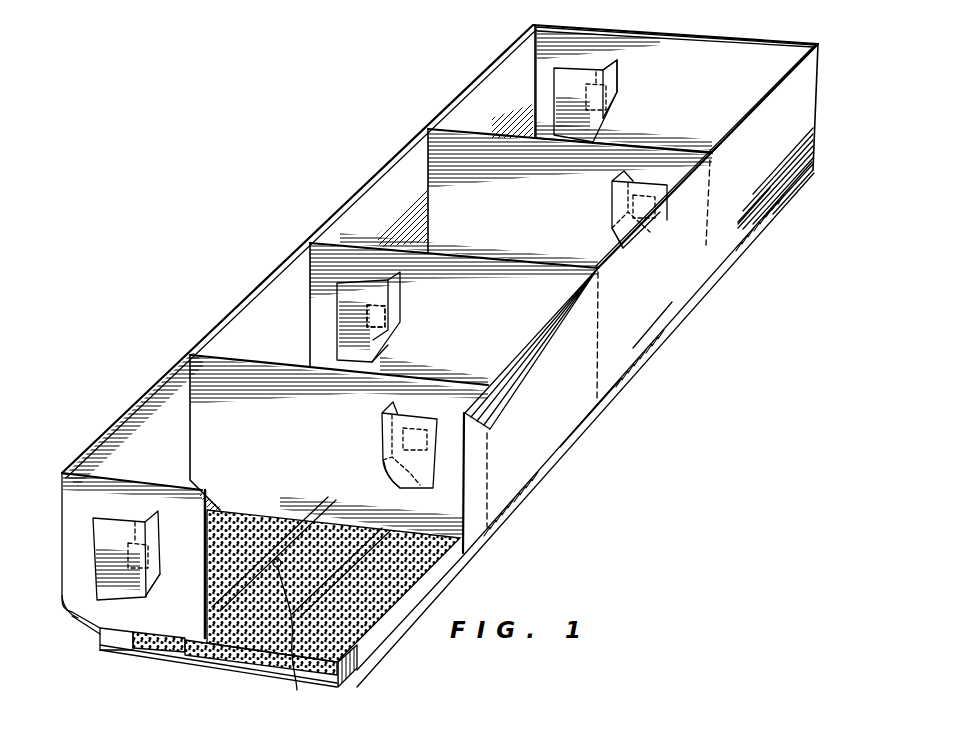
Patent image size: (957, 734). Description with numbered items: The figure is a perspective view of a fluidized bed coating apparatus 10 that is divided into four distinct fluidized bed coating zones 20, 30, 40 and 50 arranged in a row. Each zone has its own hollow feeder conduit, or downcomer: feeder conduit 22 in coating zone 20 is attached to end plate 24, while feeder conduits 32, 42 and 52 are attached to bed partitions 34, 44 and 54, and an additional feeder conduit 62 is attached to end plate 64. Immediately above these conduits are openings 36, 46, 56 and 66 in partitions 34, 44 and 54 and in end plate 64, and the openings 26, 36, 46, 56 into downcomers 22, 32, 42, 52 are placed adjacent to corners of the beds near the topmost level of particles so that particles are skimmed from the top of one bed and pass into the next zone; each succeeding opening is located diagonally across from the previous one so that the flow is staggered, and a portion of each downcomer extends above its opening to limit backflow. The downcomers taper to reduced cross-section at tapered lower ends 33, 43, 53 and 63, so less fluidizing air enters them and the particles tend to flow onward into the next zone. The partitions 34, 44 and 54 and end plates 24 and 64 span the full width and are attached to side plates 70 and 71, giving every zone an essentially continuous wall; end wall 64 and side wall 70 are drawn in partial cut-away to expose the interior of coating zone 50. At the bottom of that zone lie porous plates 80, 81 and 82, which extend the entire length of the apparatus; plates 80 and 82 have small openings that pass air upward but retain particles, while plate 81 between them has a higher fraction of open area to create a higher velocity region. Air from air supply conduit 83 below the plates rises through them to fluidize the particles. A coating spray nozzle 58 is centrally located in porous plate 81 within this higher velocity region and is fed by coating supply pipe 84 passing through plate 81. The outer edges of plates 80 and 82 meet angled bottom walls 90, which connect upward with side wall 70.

The fluidized bed apparatus 10 is at (394, 98).
The fluidized bed coating zone 20 is at (513, 80).
The feeder conduit 22 is at (617, 100).
The end plate 24 is at (675, 89).
The opening 26 is at (620, 74).
The fluidized bed coating zone 30 is at (402, 160).
The feeder conduit 32 is at (612, 203).
The tapered lower end 33 is at (615, 240).
The bed partition 34 is at (526, 199).
The opening 36 is at (652, 207).
The fluidized bed coating zone 40 is at (300, 272).
The feeder conduit 42 is at (400, 330).
The tapered lower end 43 is at (385, 352).
The bed partition 44 is at (454, 315).
The opening 46 is at (400, 292).
The fluidized bed coating zone 50 is at (172, 392).
The feeder conduit 52 is at (383, 447).
The tapered lower end 53 is at (383, 466).
The bed partition 54 is at (339, 447).
The opening 56 is at (382, 414).
The coating spray nozzle 58 is at (348, 528).
The feeder conduit 62 is at (110, 595).
The tapered lower end 63 is at (140, 585).
The end plate 64 is at (133, 561).
The opening 66 is at (136, 522).
The side plate 70 is at (585, 423).
The side plate 71 is at (252, 305).
The porous plate 80 is at (150, 645).
The porous plate 81 is at (306, 528).
The porous plate 82 is at (375, 602).
The air supply conduit 83 is at (160, 655).
The coating supply pipe 84 is at (279, 643).
The bottom wall 90 is at (90, 622).